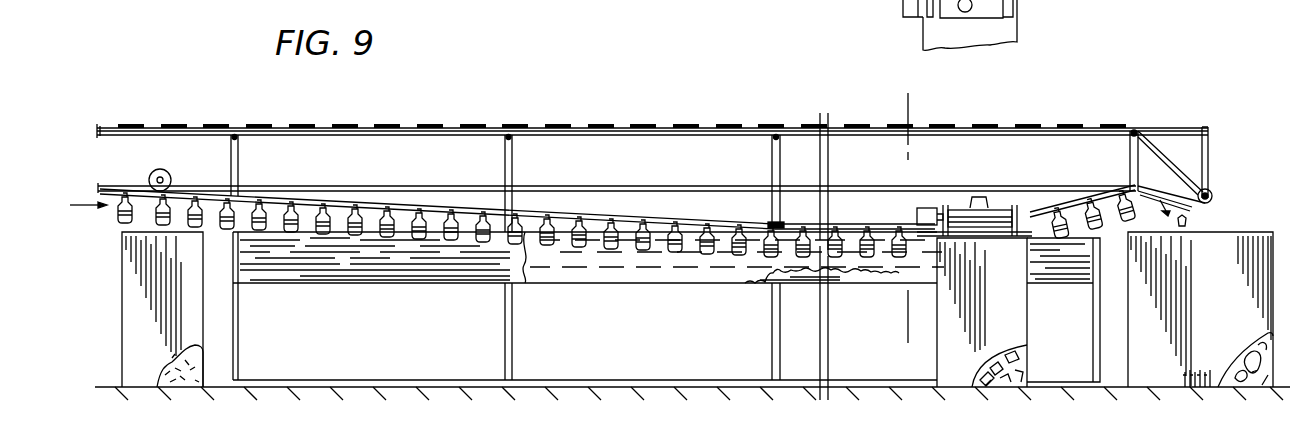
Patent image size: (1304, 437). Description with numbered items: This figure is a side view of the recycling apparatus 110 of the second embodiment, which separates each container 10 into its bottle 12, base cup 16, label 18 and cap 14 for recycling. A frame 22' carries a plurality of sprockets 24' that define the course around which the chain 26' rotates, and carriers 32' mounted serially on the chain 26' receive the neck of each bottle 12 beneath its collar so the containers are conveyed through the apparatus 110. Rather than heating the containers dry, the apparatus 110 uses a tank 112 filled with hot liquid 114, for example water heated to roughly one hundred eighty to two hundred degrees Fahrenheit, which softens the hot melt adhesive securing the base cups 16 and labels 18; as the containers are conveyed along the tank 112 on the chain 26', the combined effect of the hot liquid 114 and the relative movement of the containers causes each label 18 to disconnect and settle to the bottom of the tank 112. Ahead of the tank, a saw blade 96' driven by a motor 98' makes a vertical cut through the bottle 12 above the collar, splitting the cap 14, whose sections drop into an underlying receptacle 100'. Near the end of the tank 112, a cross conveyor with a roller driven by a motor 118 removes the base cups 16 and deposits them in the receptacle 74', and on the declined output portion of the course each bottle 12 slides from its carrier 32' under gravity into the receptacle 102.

The recycling apparatus 110 is at (618, 100).
The chain 26' is at (652, 106).
The carriers 32' is at (622, 100).
The sprockets 24' is at (745, 181).
The frame 22' is at (1178, 134).
The saw blade 96' is at (142, 167).
The motor 98' is at (142, 167).
The tank 112 is at (348, 283).
The hot liquid 114 is at (598, 268).
The label 18 is at (770, 270).
The receptacle 100' is at (162, 309).
The cap 14 is at (210, 365).
The container 10 is at (938, 100).
The motor 118 is at (910, 207).
The base cup 16 is at (978, 197).
The receptacle 74' is at (998, 193).
The receptacle 102 is at (1216, 280).
The bottle 12 is at (1188, 222).